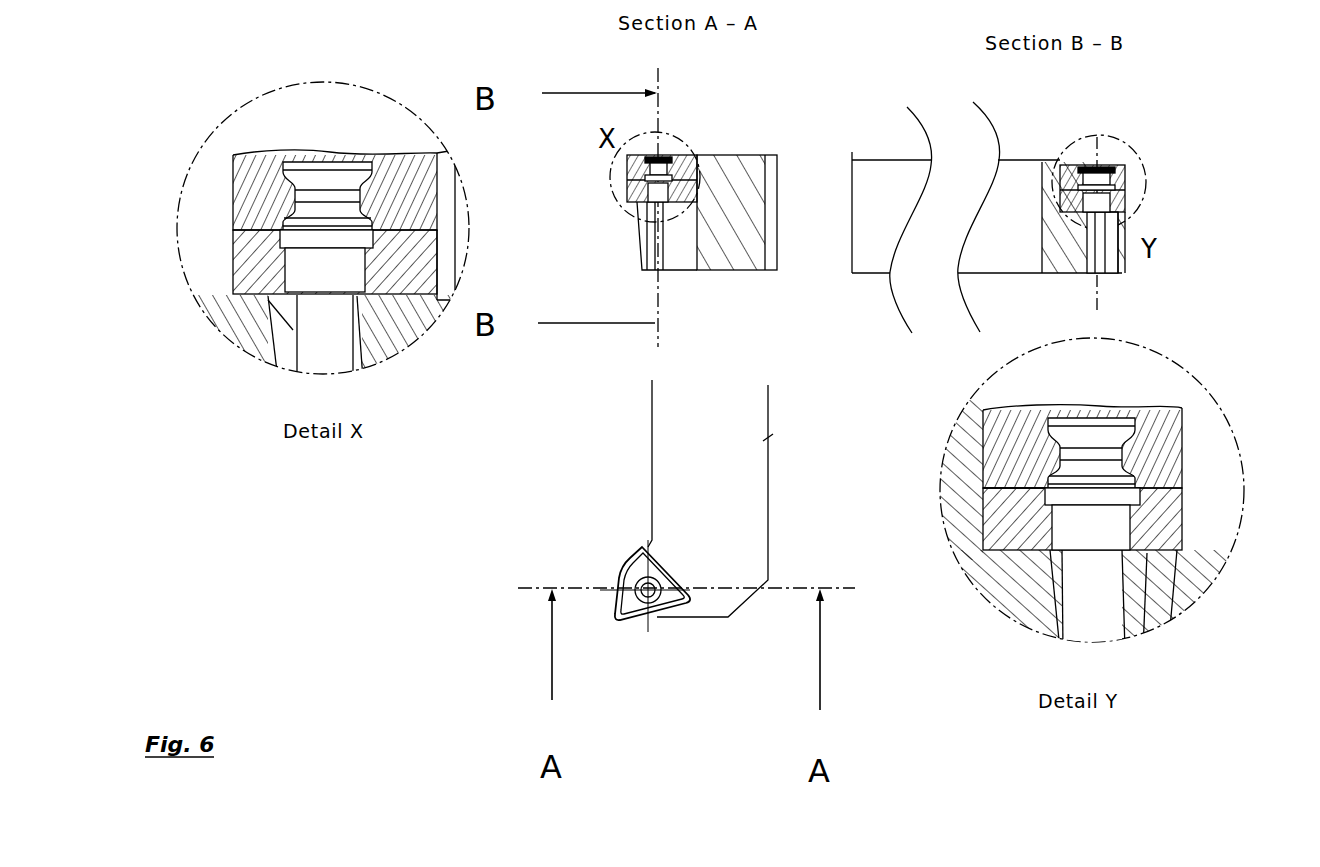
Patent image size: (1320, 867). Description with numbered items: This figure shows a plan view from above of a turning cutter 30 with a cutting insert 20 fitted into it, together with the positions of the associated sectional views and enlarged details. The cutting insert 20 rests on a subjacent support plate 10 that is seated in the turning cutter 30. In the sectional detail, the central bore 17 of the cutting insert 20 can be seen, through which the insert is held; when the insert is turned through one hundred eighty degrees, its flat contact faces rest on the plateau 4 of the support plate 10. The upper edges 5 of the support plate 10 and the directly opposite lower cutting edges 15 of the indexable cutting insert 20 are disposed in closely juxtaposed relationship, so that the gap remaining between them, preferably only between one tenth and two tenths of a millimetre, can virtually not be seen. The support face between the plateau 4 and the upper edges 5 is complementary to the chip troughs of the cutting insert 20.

The plateau 4 is at (1148, 479).
The upper edges 5 is at (1183, 490).
The support plate 10 is at (240, 263).
The lower cutting edges 15 is at (985, 497).
The central bore 17 is at (341, 175).
The cutting insert 20 is at (240, 190).
The turning cutter 30 is at (745, 153).